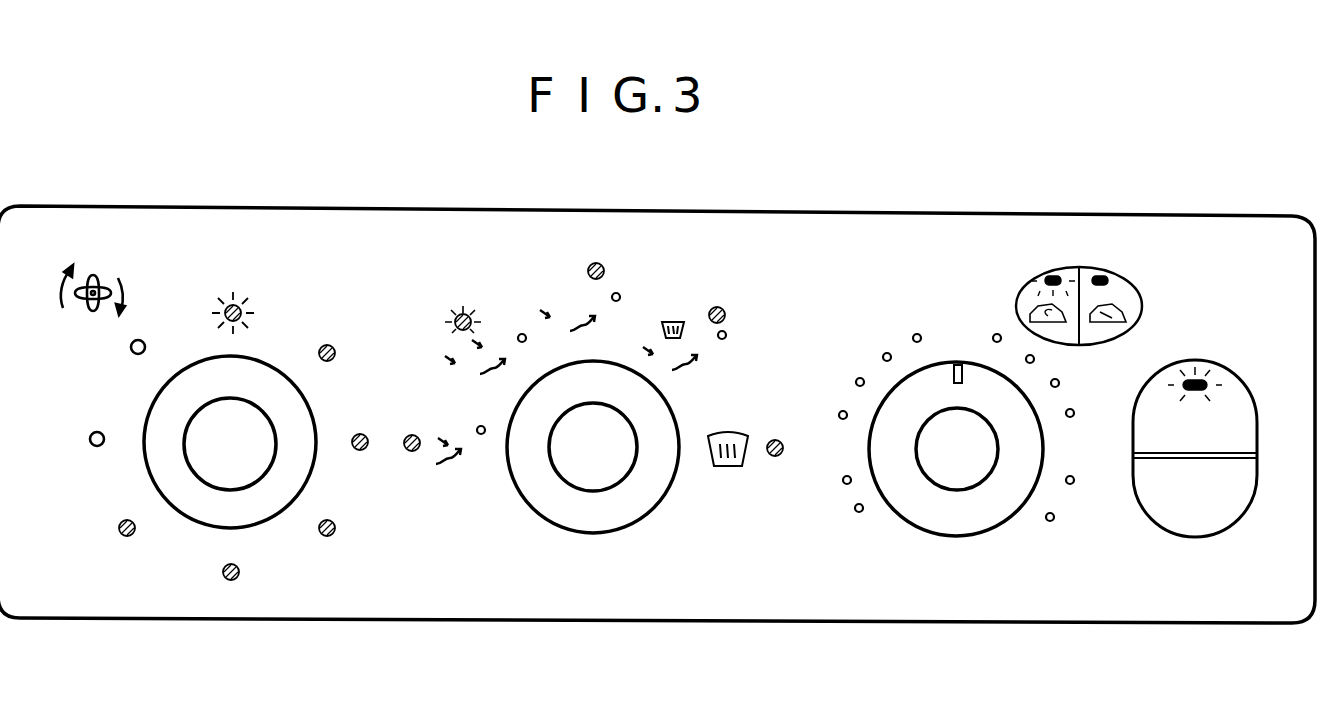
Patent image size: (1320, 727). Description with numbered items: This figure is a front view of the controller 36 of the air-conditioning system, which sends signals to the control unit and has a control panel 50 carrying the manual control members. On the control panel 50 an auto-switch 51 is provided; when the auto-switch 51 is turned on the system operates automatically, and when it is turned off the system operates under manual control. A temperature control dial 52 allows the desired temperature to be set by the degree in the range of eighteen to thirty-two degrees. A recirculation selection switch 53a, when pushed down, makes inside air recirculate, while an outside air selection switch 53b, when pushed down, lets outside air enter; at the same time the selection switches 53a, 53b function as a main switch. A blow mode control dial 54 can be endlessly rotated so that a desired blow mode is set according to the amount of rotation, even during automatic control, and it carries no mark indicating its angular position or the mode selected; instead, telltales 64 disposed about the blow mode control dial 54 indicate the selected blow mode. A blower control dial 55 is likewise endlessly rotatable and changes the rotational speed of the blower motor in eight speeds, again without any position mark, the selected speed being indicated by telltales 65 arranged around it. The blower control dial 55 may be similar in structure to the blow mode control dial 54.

The controller 36 is at (657, 369).
The control panel 50 is at (870, 231).
The auto-switch 51 is at (1268, 438).
The temperature control dial 52 is at (1030, 483).
The recirculation selection switch 53a is at (1085, 291).
The outside air selection switch 53b is at (1128, 294).
The blow mode control dial 54 is at (620, 513).
The blower control dial 55 is at (265, 502).
The telltales 64 is at (628, 268).
The telltales 65 is at (154, 325).